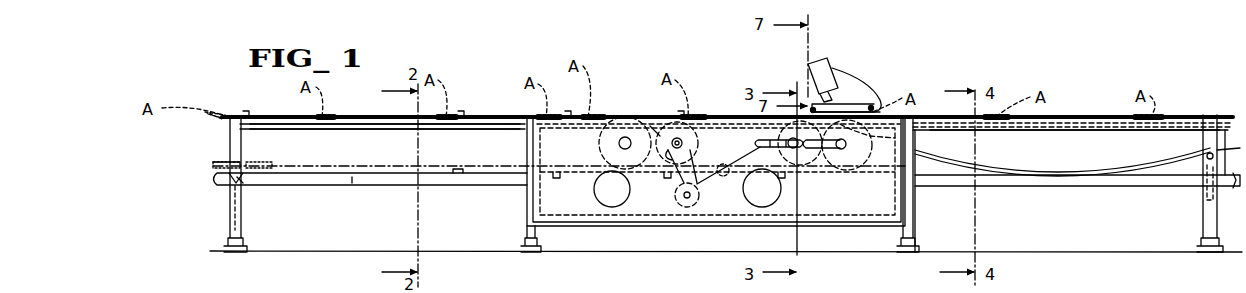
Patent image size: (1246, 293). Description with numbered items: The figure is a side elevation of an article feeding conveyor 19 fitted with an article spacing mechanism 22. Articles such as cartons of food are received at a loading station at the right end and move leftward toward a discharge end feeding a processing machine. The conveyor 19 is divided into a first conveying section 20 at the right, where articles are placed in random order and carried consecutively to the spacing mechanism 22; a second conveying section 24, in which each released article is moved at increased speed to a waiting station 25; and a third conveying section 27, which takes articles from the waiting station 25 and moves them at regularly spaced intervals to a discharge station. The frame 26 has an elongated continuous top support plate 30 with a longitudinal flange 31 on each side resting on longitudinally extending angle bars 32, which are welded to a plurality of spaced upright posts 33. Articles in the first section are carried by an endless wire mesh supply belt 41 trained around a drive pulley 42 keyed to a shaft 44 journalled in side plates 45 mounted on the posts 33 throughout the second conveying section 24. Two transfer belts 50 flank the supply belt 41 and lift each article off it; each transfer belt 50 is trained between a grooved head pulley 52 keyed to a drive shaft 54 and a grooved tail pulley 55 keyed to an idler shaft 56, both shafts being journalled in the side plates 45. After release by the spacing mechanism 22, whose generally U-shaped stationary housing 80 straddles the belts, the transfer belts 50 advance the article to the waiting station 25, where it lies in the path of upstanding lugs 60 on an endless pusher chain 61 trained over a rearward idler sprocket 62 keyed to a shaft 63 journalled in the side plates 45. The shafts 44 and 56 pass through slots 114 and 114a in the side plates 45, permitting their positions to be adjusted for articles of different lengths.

The conveyor 19 is at (506, 114).
The first conveying section 20 is at (1082, 115).
The article spacing mechanism 22 is at (868, 90).
The second conveying section 24 is at (742, 115).
The waiting station 25 is at (592, 115).
The frame 26 is at (230, 134).
The third conveying section 27 is at (384, 115).
The top support plate 30 is at (298, 126).
The longitudinal flange 31 is at (270, 116).
The angle bars 32 is at (1076, 126).
The upright posts 33 is at (240, 216).
The supply belt 41 is at (1060, 170).
The drive pulley 42 is at (806, 152).
The shaft 44 is at (792, 150).
The side plates 45 is at (552, 205).
The transfer belts 50 is at (712, 170).
The head pulley 52 is at (618, 144).
The drive shaft 54 is at (626, 148).
The tail pulley 55 is at (858, 138).
The idler shaft 56 is at (832, 150).
The lugs 60 is at (243, 113).
The pusher chain 61 is at (213, 164).
The idler sprocket 62 is at (656, 124).
The shaft 63 is at (677, 143).
The stationary housing 80 is at (840, 84).
The slot 114 is at (780, 148).
The slot 114a is at (832, 150).